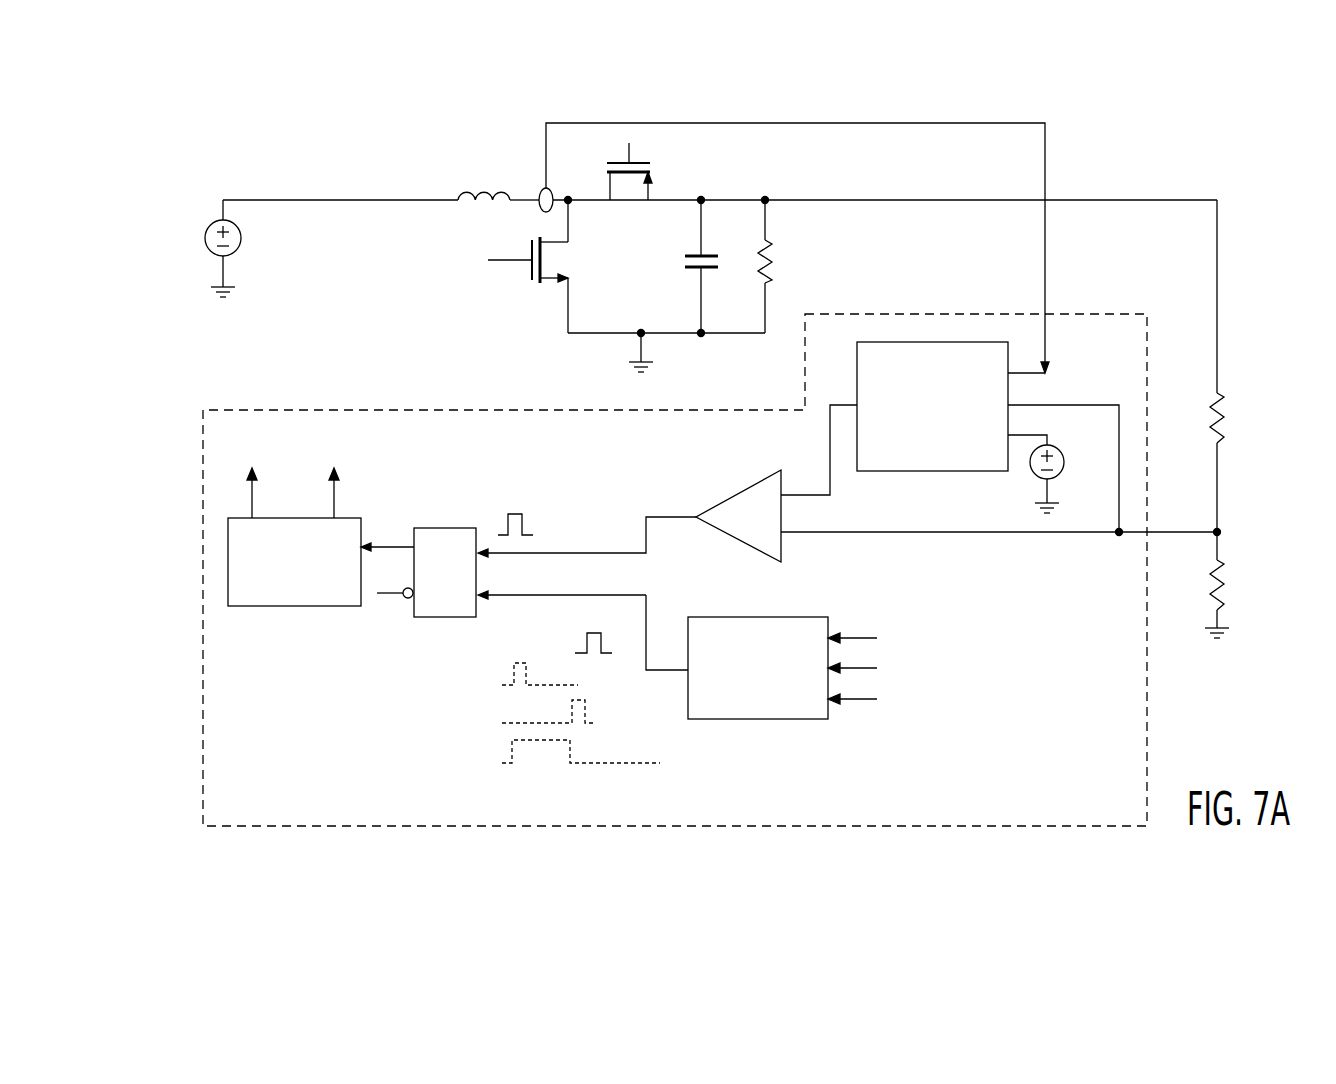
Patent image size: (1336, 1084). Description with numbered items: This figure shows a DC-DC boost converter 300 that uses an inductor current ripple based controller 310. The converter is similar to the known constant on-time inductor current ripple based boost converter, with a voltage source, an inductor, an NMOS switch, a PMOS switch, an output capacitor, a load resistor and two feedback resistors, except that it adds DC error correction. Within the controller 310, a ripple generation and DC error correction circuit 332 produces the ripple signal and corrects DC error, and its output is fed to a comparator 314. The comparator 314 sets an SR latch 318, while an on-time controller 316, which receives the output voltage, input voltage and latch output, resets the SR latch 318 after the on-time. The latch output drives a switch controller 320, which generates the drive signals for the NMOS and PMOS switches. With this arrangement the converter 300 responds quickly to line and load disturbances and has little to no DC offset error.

The DC-DC boost converter 300 is at (1247, 164).
The inductor current ripple based controller 310 is at (1147, 690).
The comparator 314 is at (742, 490).
The on-time controller 316 is at (770, 719).
The SR latch 318 is at (440, 527).
The switch controller 320 is at (290, 606).
The ripple generation and DC error correction circuit 332 is at (975, 471).